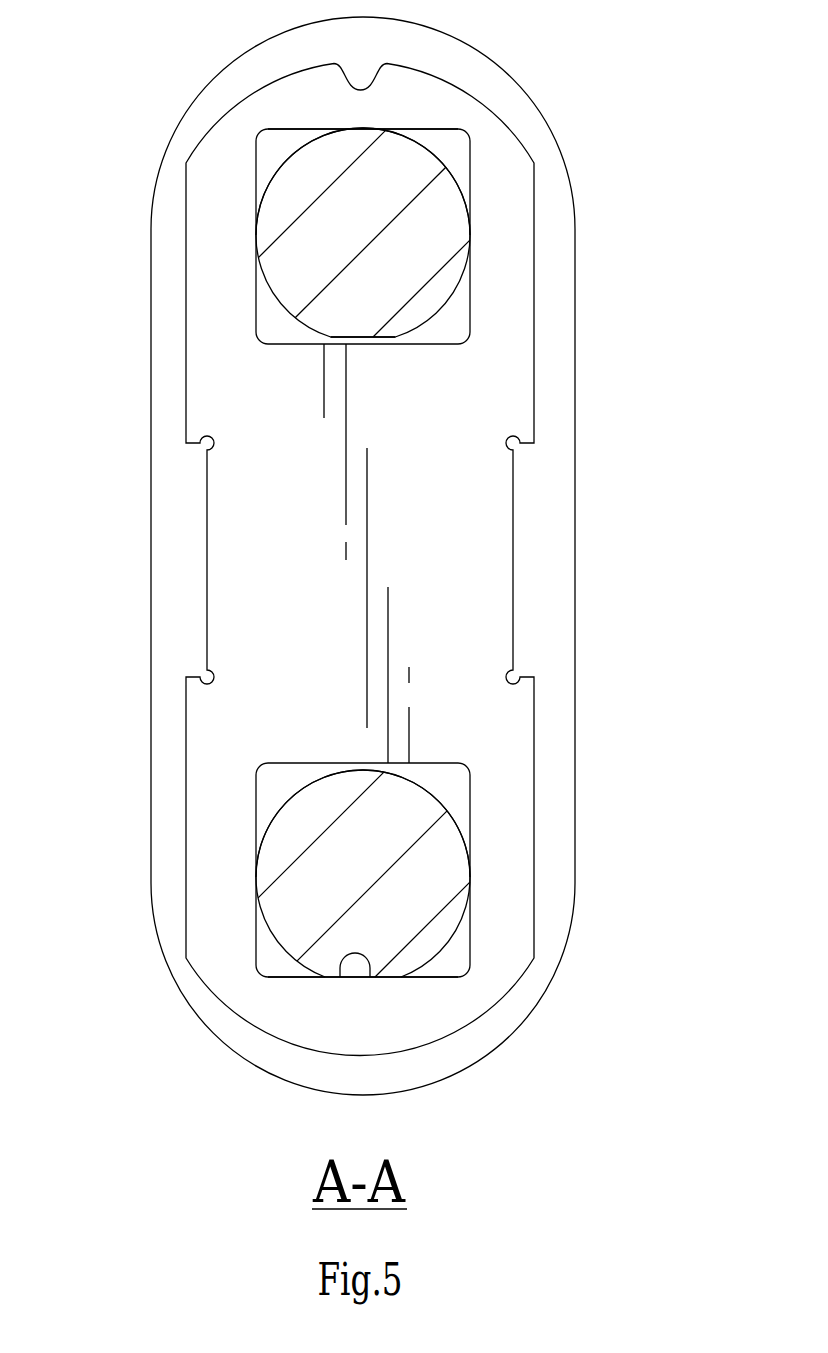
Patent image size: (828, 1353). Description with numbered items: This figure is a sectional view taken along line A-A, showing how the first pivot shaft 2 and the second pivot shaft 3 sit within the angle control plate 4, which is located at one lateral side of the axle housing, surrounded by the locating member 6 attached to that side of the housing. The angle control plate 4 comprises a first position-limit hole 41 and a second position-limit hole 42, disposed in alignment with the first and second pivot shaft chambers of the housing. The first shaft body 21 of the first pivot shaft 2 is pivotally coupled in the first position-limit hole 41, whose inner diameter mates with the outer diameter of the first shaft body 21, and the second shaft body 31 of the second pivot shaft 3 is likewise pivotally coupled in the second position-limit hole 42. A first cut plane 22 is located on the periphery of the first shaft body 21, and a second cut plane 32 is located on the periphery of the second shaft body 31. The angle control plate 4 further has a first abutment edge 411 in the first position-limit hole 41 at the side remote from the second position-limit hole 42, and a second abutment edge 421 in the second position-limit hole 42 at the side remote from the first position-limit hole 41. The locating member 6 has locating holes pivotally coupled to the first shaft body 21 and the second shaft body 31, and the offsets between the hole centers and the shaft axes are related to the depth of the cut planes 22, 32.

The locating member 6 is at (574, 183).
The angle control plate 4 is at (513, 577).
The first position-limit hole 41 is at (255, 303).
The first abutment edge 411 is at (383, 130).
The first pivot shaft 2 is at (455, 295).
The first shaft body 21 is at (273, 215).
The first cut plane 22 is at (357, 337).
The second position-limit hole 42 is at (255, 950).
The second abutment edge 421 is at (293, 978).
The second pivot shaft 3 is at (448, 813).
The second shaft body 31 is at (285, 883).
The second cut plane 32 is at (360, 956).